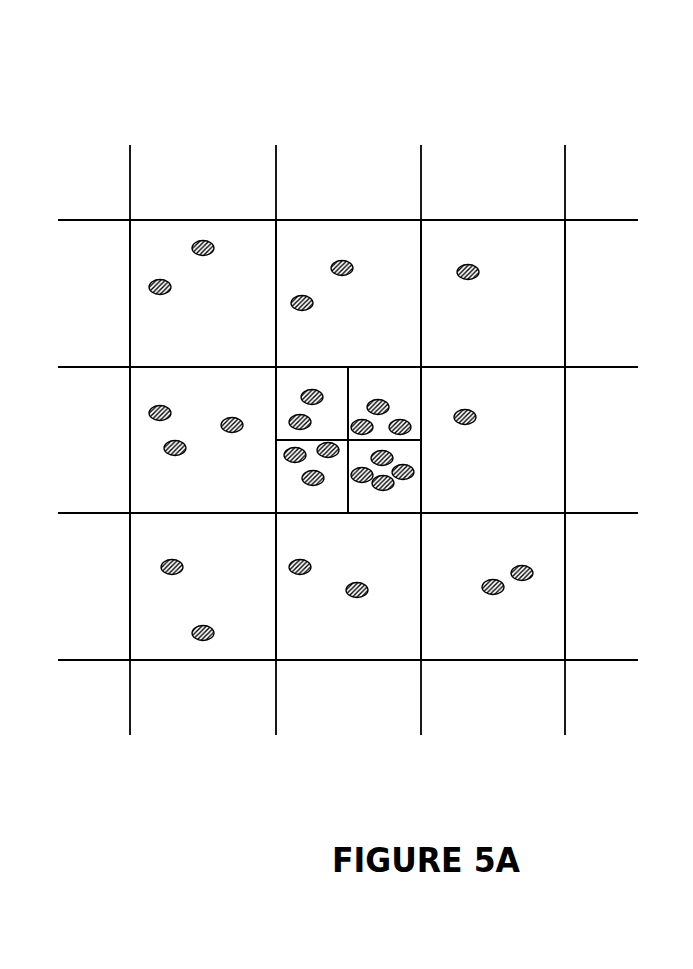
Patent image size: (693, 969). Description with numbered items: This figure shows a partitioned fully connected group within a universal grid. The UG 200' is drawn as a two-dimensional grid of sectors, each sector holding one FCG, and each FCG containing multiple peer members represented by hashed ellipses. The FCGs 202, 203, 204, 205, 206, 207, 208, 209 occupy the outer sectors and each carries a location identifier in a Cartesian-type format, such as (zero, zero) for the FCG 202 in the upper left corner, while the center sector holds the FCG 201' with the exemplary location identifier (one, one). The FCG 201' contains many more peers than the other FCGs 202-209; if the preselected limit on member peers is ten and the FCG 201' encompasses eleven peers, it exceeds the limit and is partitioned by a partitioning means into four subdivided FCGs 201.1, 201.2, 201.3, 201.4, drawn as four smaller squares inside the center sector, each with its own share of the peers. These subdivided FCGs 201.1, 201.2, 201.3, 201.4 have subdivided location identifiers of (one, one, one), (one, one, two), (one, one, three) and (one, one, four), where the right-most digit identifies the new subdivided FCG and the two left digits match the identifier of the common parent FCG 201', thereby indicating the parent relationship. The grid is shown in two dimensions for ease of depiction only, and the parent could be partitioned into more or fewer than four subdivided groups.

The UG 200' is at (348, 378).
The partitioned FCG 201' is at (348, 412).
The subdivided FCG 201.1 is at (262, 339).
The subdivided FCG 201.2 is at (447, 337).
The subdivided FCG 201.3 is at (257, 468).
The subdivided FCG 201.4 is at (447, 467).
The FCG 202 is at (203, 293).
The FCG 203 is at (348, 293).
The FCG 204 is at (493, 293).
The FCG 205 is at (203, 440).
The FCG 206 is at (493, 440).
The FCG 207 is at (203, 586).
The FCG 208 is at (348, 586).
The FCG 209 is at (493, 586).